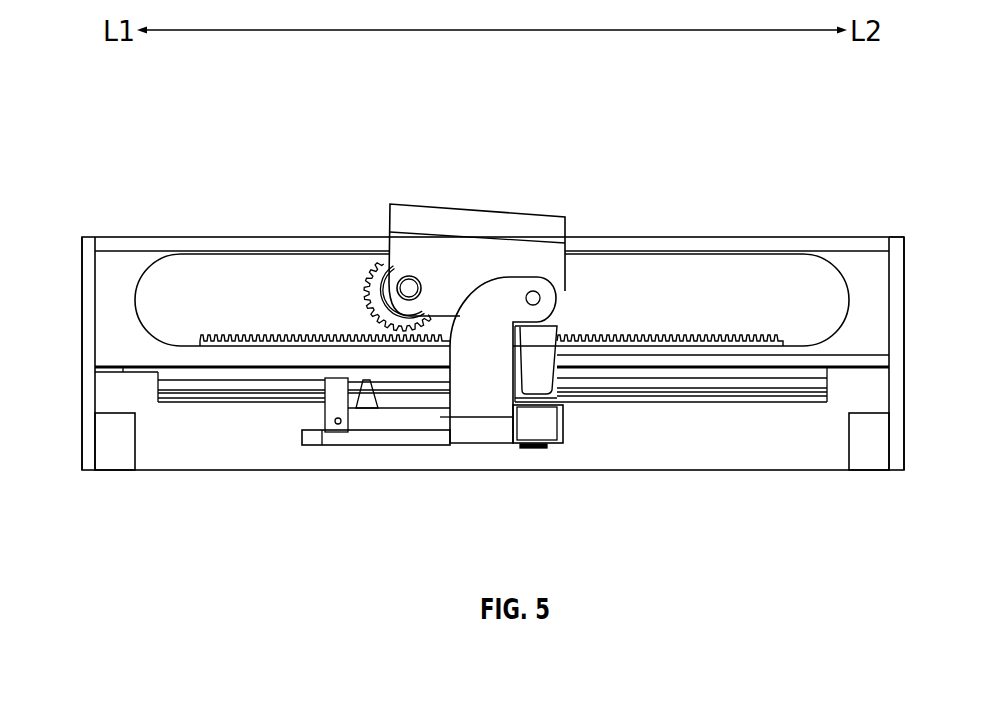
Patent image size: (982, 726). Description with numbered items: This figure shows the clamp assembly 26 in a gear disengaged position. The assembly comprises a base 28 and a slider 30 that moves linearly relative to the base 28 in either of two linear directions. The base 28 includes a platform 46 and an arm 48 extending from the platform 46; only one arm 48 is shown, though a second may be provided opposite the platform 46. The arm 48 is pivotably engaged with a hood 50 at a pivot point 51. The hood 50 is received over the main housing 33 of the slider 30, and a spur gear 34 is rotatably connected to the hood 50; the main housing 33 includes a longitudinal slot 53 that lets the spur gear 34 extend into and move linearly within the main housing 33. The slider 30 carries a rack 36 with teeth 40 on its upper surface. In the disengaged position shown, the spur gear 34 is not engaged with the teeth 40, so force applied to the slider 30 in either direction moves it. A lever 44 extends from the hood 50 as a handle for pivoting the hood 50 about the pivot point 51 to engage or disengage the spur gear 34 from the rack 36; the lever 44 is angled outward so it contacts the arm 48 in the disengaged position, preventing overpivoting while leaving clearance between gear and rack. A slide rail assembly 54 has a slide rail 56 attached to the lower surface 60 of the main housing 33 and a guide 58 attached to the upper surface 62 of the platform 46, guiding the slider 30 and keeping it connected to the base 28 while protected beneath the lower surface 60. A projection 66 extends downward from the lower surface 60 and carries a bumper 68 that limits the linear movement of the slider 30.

The clamp assembly 26 is at (85, 175).
The base 28 is at (488, 428).
The slider 30 is at (136, 245).
The main housing 33 is at (853, 258).
The spur gear 34 is at (372, 295).
The rack 36 is at (668, 334).
The teeth 40 is at (222, 337).
The lever 44 is at (540, 375).
The platform 46 is at (397, 438).
The arm 48 is at (482, 390).
The hood 50 is at (482, 252).
The pivot point 51 is at (541, 298).
The longitudinal slot 53 is at (255, 252).
The slide rail assembly 54 is at (283, 410).
The slide rail 56 is at (213, 390).
The guide 58 is at (326, 406).
The lower surface 60 is at (123, 373).
The upper surface 62 is at (310, 424).
The projection 66 is at (93, 383).
The bumper 68 is at (115, 457).